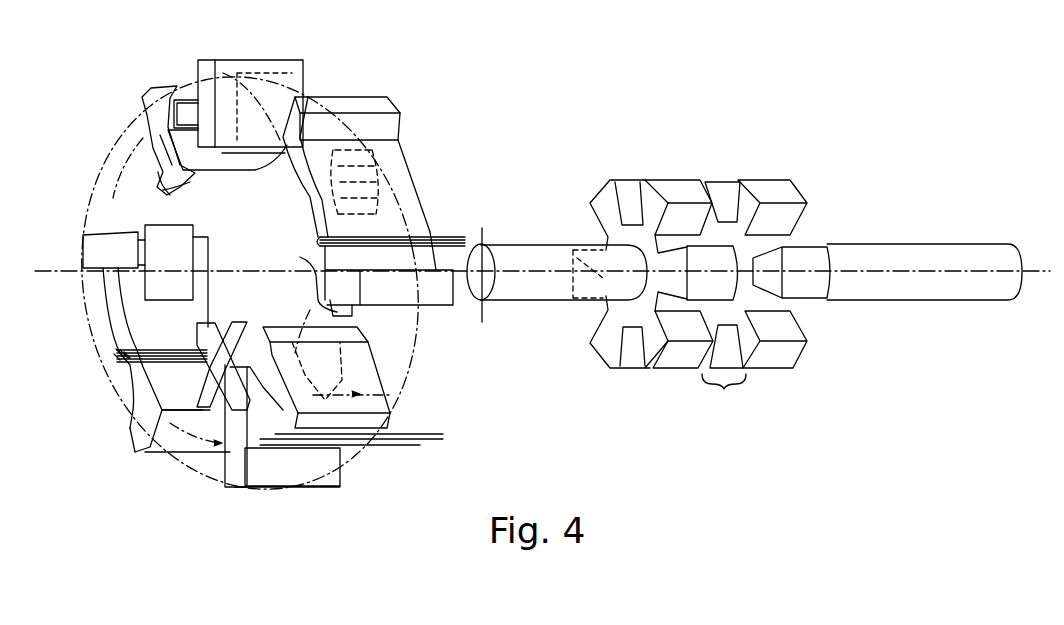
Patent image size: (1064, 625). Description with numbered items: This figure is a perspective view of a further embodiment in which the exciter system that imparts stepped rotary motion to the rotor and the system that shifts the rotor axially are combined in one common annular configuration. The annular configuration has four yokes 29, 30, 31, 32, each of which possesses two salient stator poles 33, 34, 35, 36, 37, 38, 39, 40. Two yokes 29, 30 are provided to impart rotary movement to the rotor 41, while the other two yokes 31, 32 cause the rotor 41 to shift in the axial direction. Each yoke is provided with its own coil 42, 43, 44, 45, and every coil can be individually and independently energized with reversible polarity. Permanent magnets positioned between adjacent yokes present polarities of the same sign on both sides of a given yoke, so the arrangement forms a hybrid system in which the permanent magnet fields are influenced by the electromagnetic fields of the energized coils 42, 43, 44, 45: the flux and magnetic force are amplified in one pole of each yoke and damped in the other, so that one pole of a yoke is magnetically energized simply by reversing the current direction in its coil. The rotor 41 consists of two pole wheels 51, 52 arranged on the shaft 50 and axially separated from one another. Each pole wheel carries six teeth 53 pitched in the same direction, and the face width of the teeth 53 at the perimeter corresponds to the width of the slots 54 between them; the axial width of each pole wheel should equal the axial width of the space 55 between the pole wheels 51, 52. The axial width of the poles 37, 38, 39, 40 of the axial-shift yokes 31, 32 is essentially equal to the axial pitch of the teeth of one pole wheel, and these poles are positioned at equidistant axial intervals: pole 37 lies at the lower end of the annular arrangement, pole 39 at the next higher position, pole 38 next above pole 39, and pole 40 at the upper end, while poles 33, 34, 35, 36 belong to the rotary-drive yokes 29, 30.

The yoke 29 is at (147, 97).
The yoke 30 is at (232, 470).
The yoke 31 is at (297, 110).
The yoke 32 is at (143, 433).
The salient stator pole 33 is at (160, 197).
The salient stator pole 34 is at (215, 173).
The salient stator pole 35 is at (236, 330).
The salient stator pole 36 is at (258, 330).
The pole 37 is at (325, 150).
The pole 38 is at (301, 258).
The pole 39 is at (217, 337).
The pole 40 is at (184, 269).
The rotor 41 is at (722, 124).
The coil 42 is at (172, 97).
The coil 43 is at (338, 450).
The coil 44 is at (388, 240).
The coil 45 is at (118, 351).
The shaft 50 is at (893, 258).
The pole wheel 51 is at (819, 228).
The pole wheel 52 is at (593, 313).
The teeth 53 is at (677, 193).
The slots 54 is at (630, 195).
The space 55 is at (724, 396).